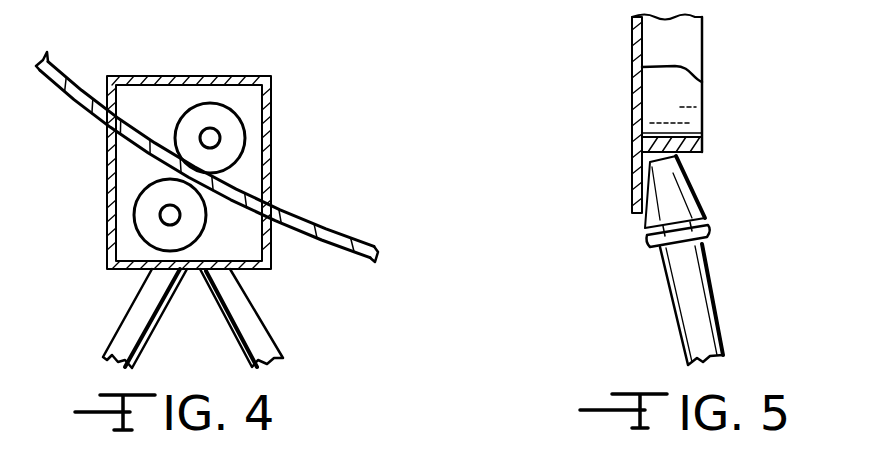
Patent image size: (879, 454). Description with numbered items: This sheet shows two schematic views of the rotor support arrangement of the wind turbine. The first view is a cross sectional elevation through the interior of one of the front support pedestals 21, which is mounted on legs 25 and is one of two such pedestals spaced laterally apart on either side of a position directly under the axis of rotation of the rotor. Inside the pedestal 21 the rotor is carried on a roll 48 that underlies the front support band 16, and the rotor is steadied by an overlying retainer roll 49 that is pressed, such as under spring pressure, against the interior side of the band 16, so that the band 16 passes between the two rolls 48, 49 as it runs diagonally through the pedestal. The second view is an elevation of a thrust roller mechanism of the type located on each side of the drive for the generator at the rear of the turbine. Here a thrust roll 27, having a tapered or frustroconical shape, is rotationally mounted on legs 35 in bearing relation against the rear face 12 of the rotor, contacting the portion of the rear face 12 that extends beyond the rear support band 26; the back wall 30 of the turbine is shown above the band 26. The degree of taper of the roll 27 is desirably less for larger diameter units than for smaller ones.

In FIG. 5, the rear face 12 is at (646, 197).
In FIG. 4, the front support band 16 is at (312, 223).
In FIG. 4, the front support pedestal 21 is at (270, 135).
In FIG. 4, the legs 25 is at (262, 311).
In FIG. 5, the rear support band 26 is at (670, 140).
In FIG. 5, the thrust roll 27 is at (692, 180).
In FIG. 5, the back wall 30 is at (702, 82).
In FIG. 5, the legs 35 is at (705, 270).
In FIG. 4, the roll 48 is at (134, 210).
In FIG. 4, the retainer roll 49 is at (235, 113).